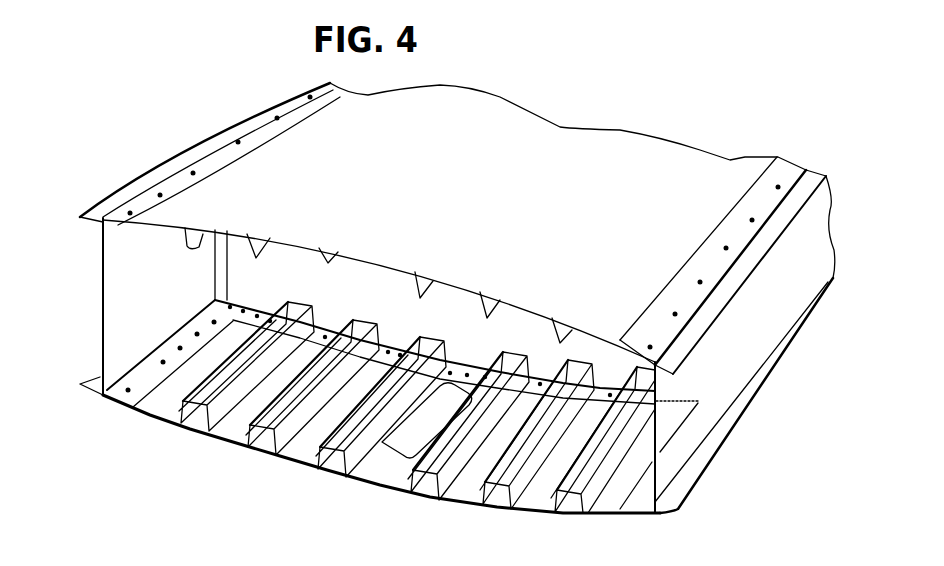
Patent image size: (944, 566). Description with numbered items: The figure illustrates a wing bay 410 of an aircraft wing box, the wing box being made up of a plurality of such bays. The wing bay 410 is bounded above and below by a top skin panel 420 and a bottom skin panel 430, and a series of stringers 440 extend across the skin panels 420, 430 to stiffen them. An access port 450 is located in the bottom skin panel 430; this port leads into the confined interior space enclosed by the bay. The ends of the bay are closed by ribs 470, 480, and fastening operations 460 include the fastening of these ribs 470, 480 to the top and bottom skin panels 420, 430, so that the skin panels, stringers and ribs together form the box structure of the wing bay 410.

The wing bay 410 is at (737, 152).
The top skin panel 420 is at (557, 138).
The bottom skin panel 430 is at (605, 514).
The stringers 440 is at (380, 385).
The access port 450 is at (378, 440).
The fastening operations 460 is at (144, 378).
The rib 470 is at (102, 280).
The rib 480 is at (834, 211).